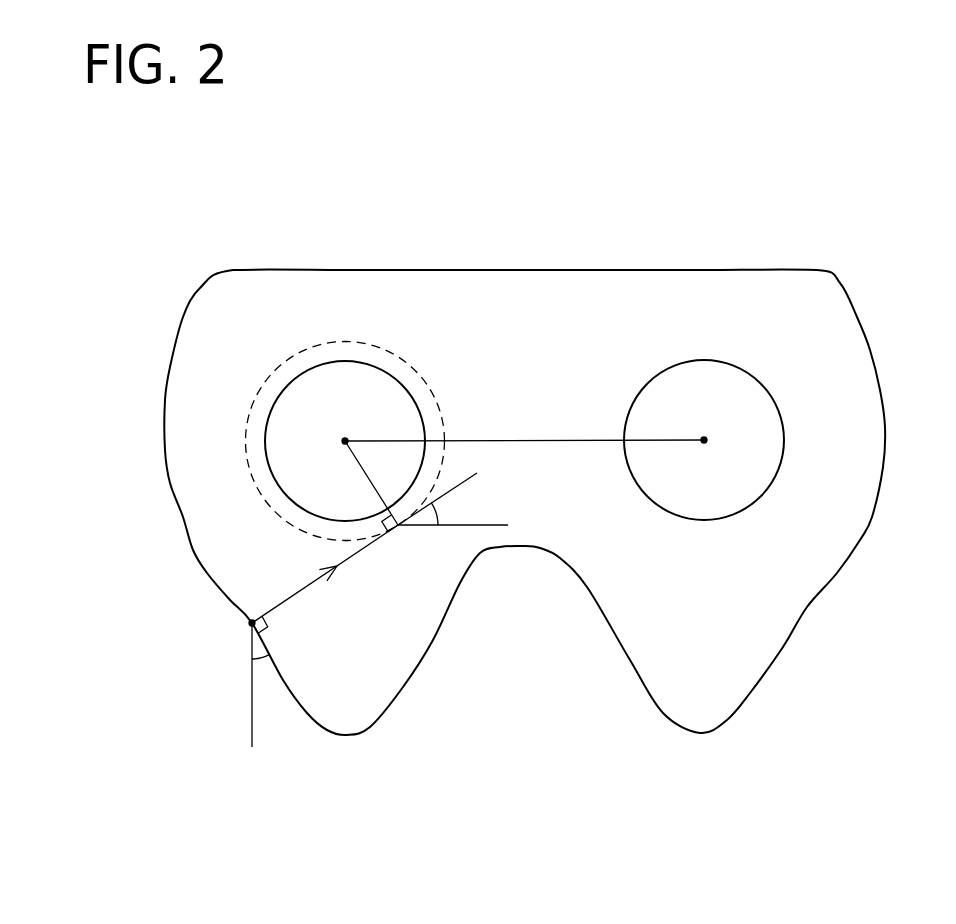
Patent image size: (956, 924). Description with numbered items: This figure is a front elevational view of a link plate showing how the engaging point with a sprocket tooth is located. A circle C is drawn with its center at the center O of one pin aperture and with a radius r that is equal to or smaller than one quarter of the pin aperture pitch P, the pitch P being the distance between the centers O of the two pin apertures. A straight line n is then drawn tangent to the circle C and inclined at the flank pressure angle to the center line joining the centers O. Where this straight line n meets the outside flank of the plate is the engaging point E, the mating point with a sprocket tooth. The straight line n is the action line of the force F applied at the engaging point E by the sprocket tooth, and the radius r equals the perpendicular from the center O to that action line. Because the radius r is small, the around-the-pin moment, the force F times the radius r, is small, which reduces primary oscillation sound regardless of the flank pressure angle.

The center of pin aperture O is at (524, 440).
The circle C is at (412, 365).
The pin aperture pitch P is at (704, 440).
The radius r is at (345, 441).
The straight line n is at (370, 544).
The engaging point E is at (244, 634).
The force F is at (325, 582).